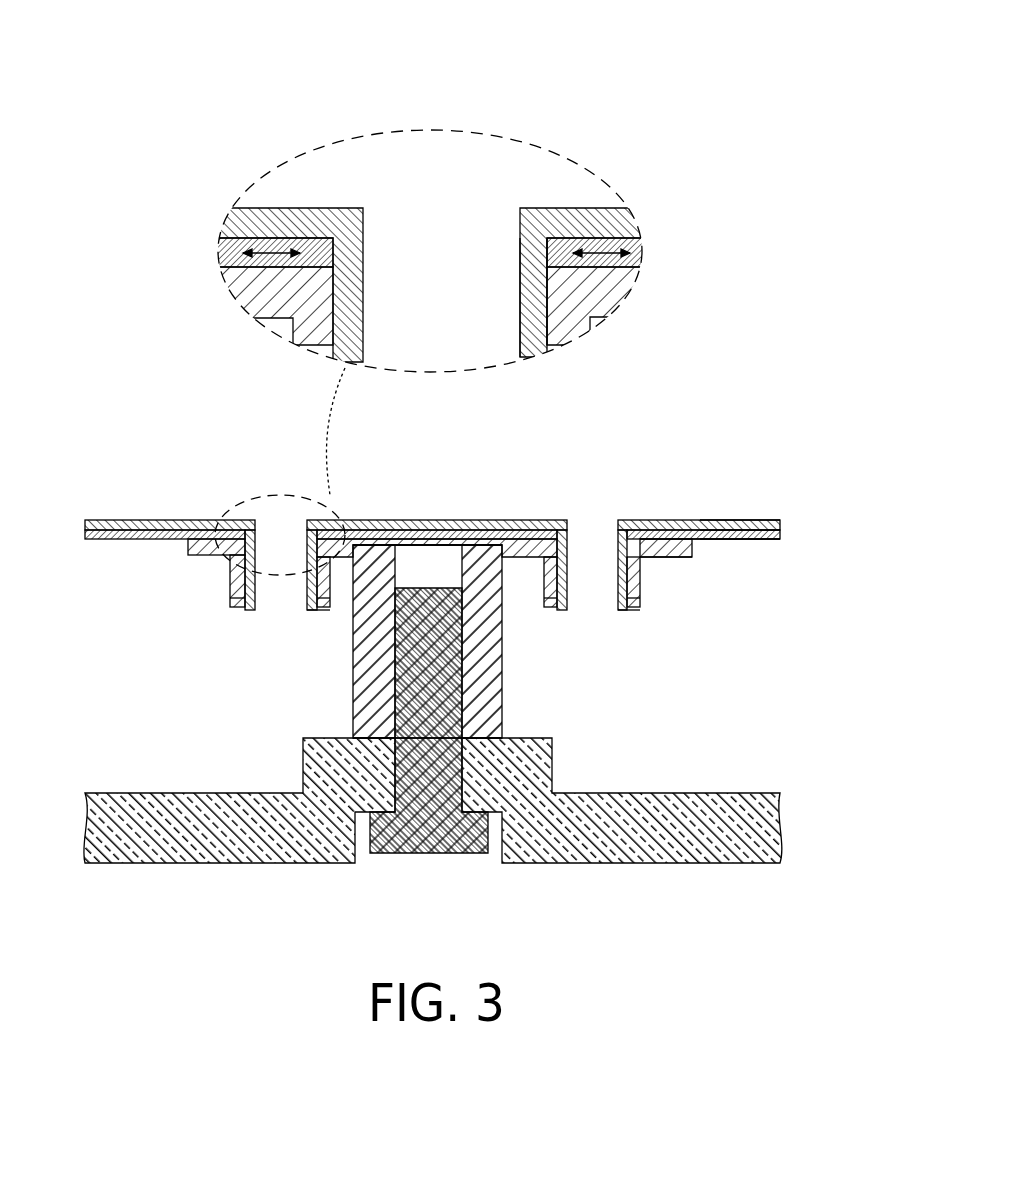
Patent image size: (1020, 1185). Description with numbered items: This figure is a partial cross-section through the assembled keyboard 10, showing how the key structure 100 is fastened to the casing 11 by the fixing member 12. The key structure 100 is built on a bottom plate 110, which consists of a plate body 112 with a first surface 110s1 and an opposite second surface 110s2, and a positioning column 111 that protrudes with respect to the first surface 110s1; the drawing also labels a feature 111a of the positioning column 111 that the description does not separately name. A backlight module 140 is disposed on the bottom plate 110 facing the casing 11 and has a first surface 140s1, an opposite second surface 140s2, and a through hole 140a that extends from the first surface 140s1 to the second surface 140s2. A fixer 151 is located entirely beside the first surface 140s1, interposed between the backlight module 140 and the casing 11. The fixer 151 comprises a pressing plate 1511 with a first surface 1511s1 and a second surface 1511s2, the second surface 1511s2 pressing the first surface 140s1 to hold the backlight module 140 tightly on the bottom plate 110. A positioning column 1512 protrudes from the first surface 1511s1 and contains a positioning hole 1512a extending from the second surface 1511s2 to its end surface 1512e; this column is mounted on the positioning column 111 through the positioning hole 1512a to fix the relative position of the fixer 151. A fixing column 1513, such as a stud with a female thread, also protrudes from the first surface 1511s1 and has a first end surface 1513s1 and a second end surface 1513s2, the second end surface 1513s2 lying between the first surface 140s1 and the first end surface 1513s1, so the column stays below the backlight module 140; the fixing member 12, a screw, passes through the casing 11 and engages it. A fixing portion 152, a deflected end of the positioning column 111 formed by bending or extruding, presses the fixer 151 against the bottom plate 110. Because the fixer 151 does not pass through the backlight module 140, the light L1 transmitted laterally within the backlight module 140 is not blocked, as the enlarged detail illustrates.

The keyboard 10 is at (44, 33).
The key structure 100 is at (110, 478).
The bottom plate 110 is at (392, 432).
The positioning column 111 is at (237, 578).
The outer surface of side wall 111a is at (519, 316).
The plate body 112 is at (163, 528).
The first surface 110s1 is at (732, 541).
The second surface 110s2 is at (745, 518).
The casing 11 is at (738, 826).
The fixing member 12 is at (445, 855).
The backlight module 140 is at (776, 537).
The through hole 140a is at (518, 243).
The first surface 140s1 is at (745, 540).
The second surface 140s2 is at (745, 530).
The fixer 151 is at (504, 515).
The pressing plate 1511 is at (688, 558).
The first surface 1511s1 is at (670, 560).
The second surface 1511s2 is at (663, 528).
The positioning column 1512 is at (642, 590).
The positioning hole 1512a is at (546, 326).
The end surface 1512e is at (325, 608).
The fixing column 1513 is at (485, 700).
The first end surface 1513s1 is at (375, 740).
The second end surface 1513s2 is at (377, 540).
The fixing portion 152 is at (237, 606).
The light L1 is at (286, 250).